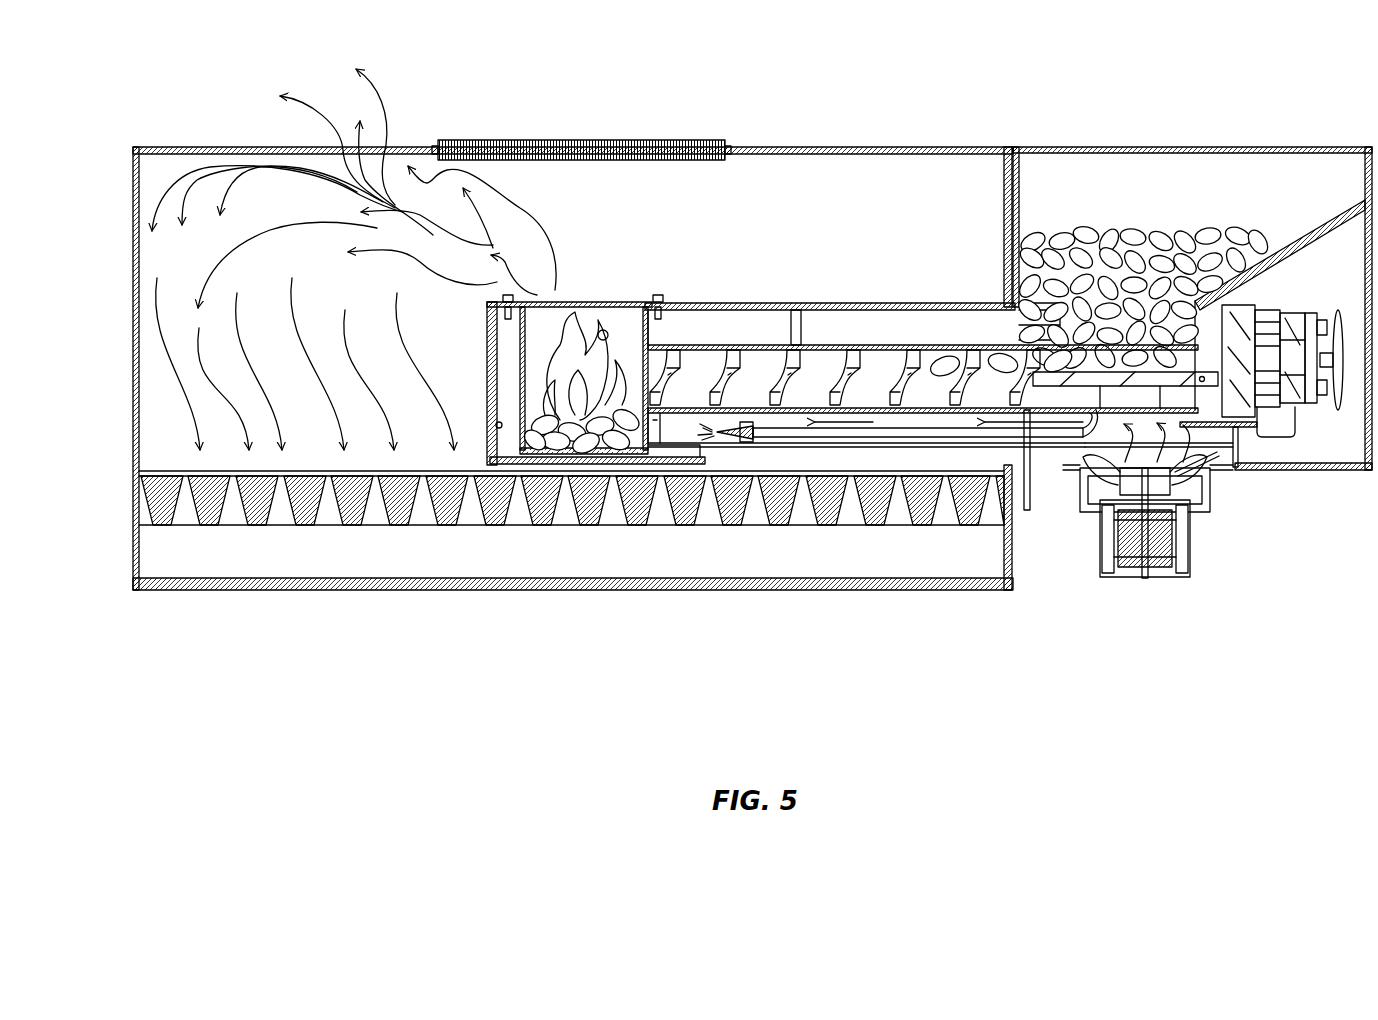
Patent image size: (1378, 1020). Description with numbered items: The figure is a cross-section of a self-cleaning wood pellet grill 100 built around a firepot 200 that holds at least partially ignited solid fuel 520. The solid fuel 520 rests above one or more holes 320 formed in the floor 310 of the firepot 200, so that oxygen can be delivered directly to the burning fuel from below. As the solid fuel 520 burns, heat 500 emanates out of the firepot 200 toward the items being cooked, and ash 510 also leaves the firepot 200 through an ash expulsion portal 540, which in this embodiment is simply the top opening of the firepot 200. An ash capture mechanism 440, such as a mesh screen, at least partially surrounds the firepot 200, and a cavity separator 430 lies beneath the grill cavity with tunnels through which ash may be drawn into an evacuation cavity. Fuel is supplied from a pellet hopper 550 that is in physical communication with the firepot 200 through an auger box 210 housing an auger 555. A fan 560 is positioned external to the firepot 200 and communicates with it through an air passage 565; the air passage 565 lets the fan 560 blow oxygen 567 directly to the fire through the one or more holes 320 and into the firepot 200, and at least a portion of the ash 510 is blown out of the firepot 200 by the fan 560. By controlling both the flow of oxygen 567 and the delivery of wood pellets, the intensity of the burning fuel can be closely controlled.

The wood pellet grill 100 is at (623, 322).
The firepot 200 is at (606, 388).
The auger box 210 is at (818, 305).
The floor 310 is at (508, 442).
The one or more holes 320 is at (568, 458).
The cavity separator 430 is at (135, 475).
The ash capture mechanism 440 is at (865, 147).
The heat 500 is at (505, 188).
The ash 510 is at (199, 150).
The solid fuel 520 is at (626, 447).
The ash expulsion portal 540 is at (582, 288).
The pellet hopper 550 is at (1195, 147).
The auger 555 is at (848, 305).
The fan 560 is at (1190, 476).
The air passage 565 is at (888, 432).
The oxygen 567 is at (850, 442).